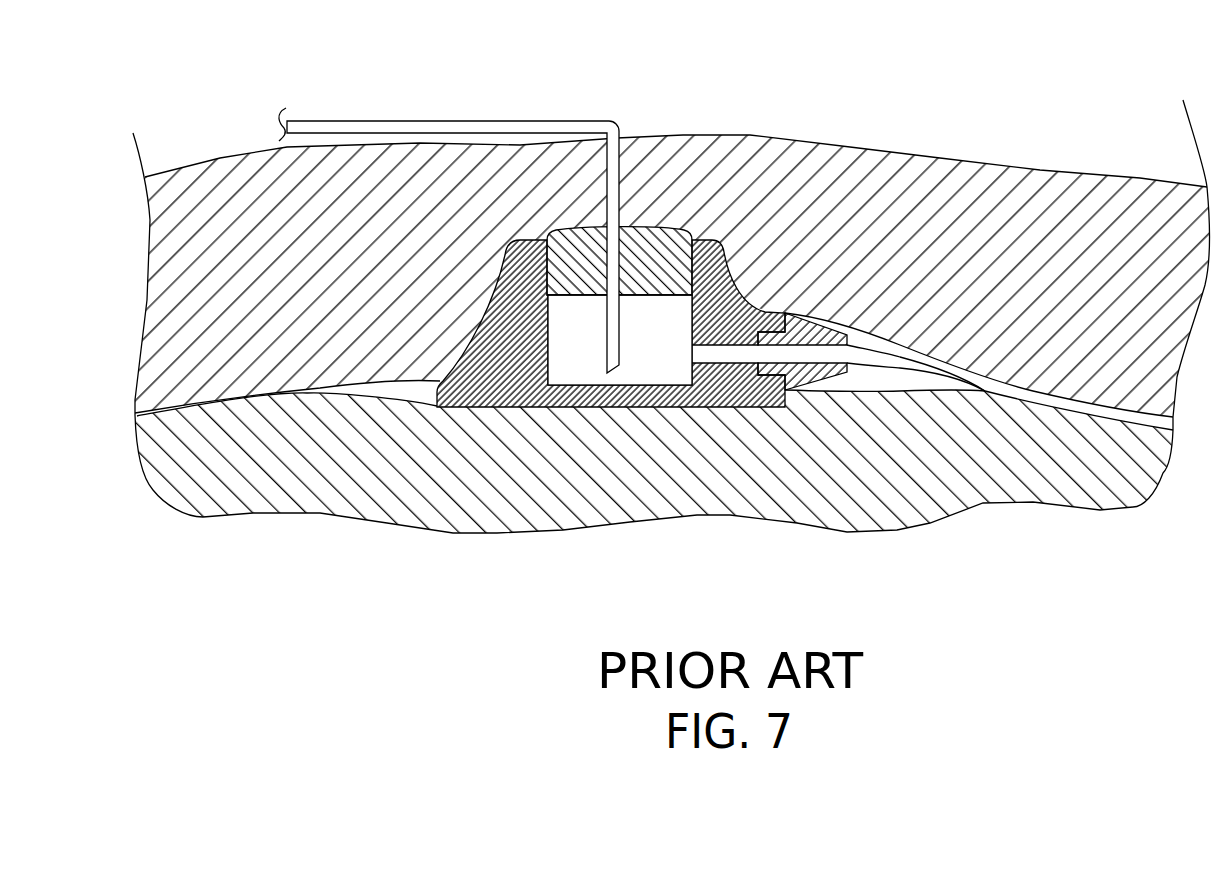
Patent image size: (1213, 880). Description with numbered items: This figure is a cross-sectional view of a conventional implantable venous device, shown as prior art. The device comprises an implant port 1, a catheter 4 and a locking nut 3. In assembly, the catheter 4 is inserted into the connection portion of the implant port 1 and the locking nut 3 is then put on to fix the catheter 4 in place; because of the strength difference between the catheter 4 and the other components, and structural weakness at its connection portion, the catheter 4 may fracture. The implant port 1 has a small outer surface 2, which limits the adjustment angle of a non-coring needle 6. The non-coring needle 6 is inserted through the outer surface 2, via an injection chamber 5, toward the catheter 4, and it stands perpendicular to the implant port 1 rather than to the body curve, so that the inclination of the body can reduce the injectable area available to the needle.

The implant port 1 is at (735, 265).
The outer surface 2 is at (648, 250).
The locking nut 3 is at (810, 385).
The catheter 4 is at (875, 347).
The injection chamber 5 is at (573, 348).
The non-coring needle 6 is at (478, 121).